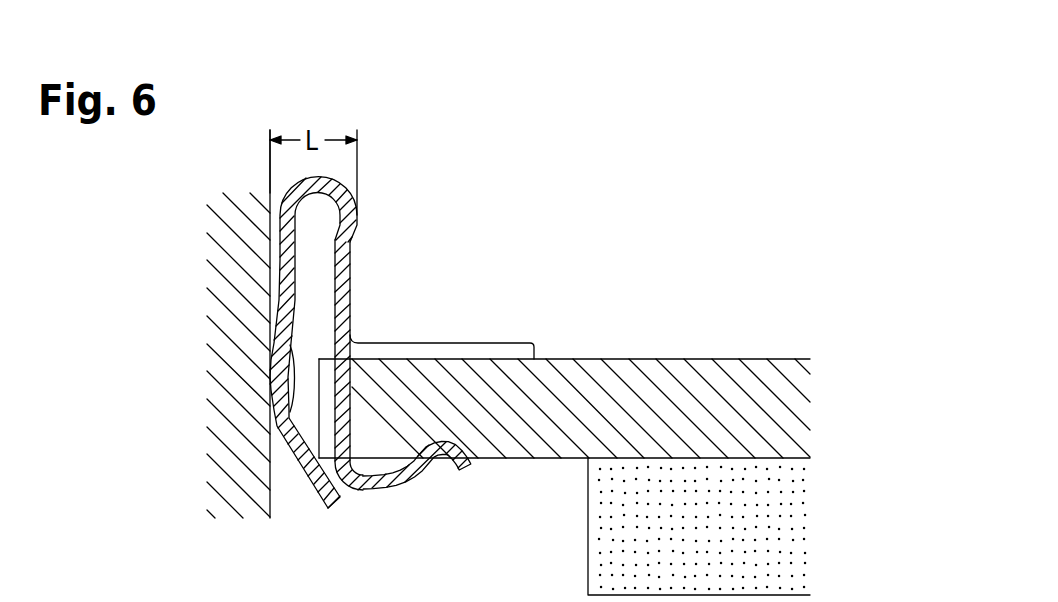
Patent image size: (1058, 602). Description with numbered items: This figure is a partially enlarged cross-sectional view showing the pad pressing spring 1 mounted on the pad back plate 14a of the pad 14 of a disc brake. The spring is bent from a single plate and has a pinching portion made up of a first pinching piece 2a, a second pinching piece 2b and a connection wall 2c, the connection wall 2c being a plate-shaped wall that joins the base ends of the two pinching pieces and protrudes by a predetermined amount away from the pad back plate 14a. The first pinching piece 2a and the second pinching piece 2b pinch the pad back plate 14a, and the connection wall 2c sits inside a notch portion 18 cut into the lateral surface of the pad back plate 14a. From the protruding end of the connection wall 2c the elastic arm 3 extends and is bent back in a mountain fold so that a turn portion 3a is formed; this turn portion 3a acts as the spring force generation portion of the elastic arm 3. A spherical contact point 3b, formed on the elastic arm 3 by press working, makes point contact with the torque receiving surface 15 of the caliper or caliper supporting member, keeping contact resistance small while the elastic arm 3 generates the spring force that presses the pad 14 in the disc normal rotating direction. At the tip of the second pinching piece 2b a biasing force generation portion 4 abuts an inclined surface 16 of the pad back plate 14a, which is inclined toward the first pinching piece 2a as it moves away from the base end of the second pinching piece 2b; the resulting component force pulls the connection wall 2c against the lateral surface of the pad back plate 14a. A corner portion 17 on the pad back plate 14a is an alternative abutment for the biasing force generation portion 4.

The pad pressing spring 1 is at (382, 244).
The first pinching piece 2a is at (418, 352).
The second pinching piece 2b is at (387, 475).
The connection wall 2c is at (343, 307).
The elastic arm 3 is at (283, 293).
The turn portion 3a is at (328, 188).
The contact point 3b is at (270, 373).
The biasing force generation portion 4 is at (447, 473).
The pad 14 is at (568, 566).
The pad back plate 14a is at (687, 378).
The torque receiving surface 15 is at (268, 238).
The inclined surface 16 is at (452, 452).
The corner portion 17 is at (322, 414).
The notch portion 18 is at (337, 442).